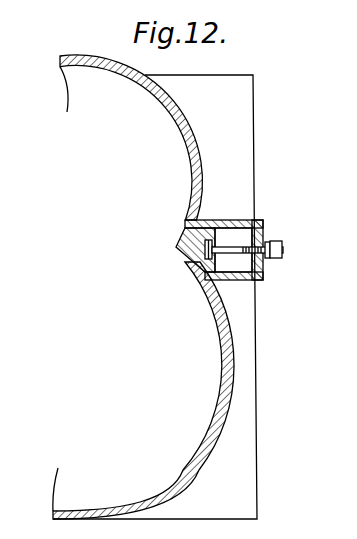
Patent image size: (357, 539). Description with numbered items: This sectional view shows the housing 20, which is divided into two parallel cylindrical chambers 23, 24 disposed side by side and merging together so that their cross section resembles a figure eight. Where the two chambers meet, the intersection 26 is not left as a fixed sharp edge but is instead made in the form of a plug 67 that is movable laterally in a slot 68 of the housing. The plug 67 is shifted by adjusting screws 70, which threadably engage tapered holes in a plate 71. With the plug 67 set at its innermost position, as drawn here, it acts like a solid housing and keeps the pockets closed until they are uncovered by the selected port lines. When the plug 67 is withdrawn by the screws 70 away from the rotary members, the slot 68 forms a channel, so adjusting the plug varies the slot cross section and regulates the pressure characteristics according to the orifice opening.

The housing 20 is at (229, 498).
The cylindrical chamber 23 is at (131, 137).
The cylindrical chamber 24 is at (143, 390).
The intersection 26 is at (178, 246).
The plug 67 is at (191, 264).
The slot 68 is at (219, 270).
The adjusting screw 70 is at (276, 242).
The plate 71 is at (259, 276).